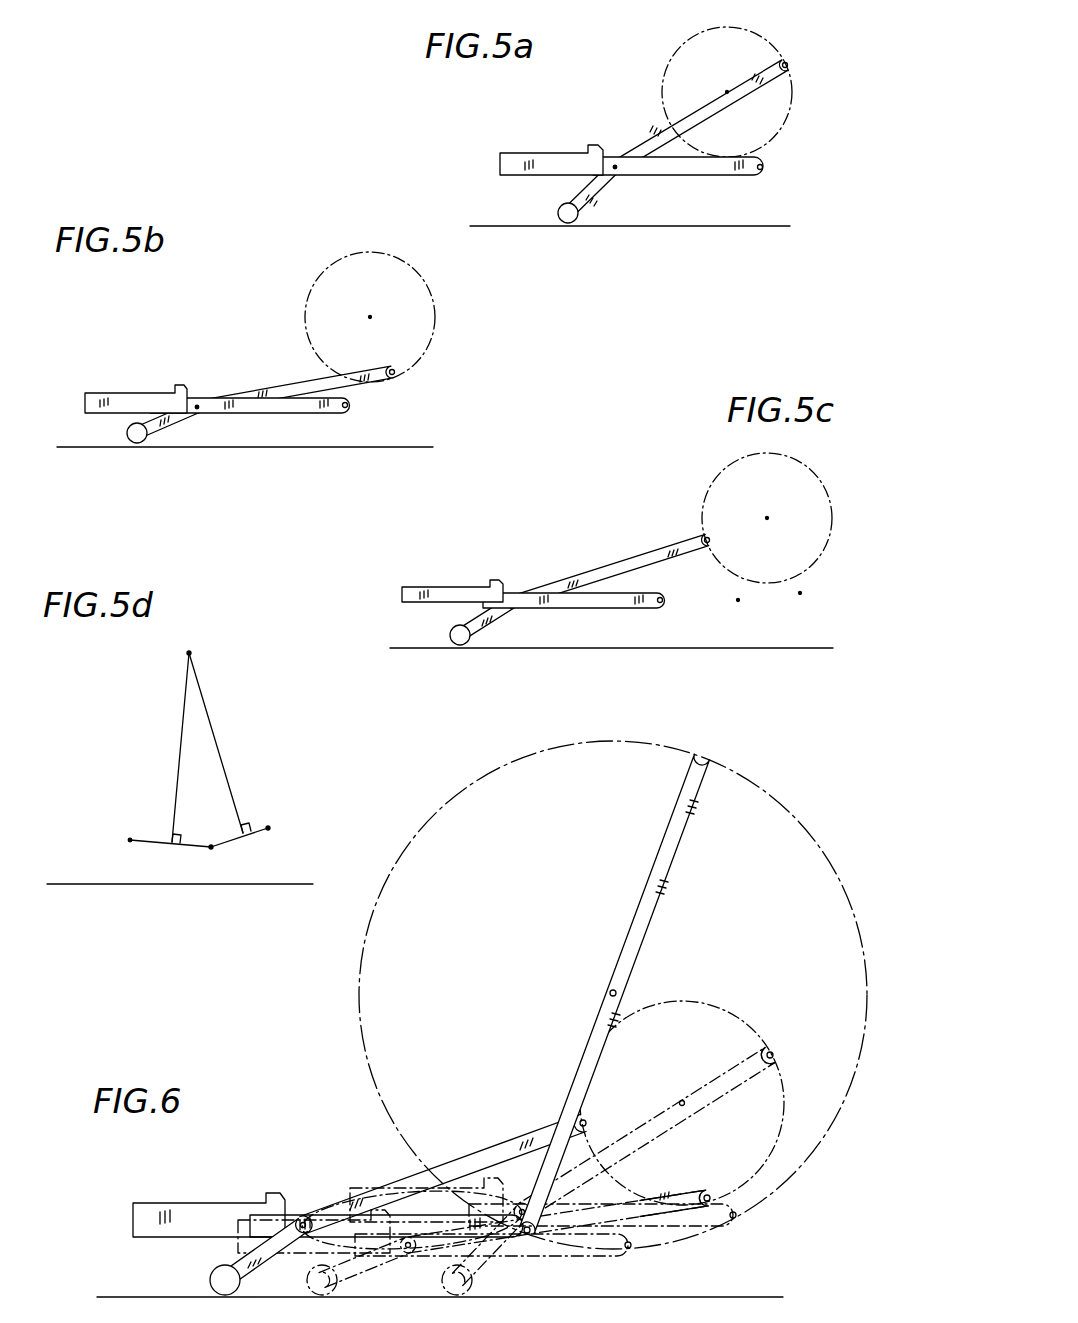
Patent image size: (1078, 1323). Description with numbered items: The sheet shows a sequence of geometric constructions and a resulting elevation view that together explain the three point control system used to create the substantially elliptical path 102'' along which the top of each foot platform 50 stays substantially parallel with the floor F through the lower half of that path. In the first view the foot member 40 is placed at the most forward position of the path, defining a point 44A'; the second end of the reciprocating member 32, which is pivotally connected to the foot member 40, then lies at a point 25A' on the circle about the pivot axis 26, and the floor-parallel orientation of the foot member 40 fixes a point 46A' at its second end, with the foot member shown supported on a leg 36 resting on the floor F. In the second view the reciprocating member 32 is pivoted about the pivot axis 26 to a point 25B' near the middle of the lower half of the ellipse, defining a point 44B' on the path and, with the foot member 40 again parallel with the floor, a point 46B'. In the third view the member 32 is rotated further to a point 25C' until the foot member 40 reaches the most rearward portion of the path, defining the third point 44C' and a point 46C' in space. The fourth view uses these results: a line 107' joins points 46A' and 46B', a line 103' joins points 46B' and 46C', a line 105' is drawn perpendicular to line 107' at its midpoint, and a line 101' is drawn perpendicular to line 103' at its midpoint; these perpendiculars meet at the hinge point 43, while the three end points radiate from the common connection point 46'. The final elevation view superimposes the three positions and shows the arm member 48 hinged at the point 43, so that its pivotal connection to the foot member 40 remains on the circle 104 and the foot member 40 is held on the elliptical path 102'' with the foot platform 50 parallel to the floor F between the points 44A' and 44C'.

In FIG. 5a, the pivot axis 26 is at (727, 92).
In FIG. 5b, the pivot axis 26 is at (370, 317).
In FIG. 5c, the pivot axis 26 is at (767, 518).
In FIG. 5a, the reciprocating member 32 is at (645, 152).
In FIG. 5a, the roller leg 36 is at (570, 218).
In FIG. 5b, the roller leg 36 is at (163, 423).
In FIG. 5c, the roller leg 36 is at (482, 621).
In FIG. 6, the roller leg 36 is at (210, 1280).
In FIG. 5a, the foot member 40 is at (687, 176).
In FIG. 6, the hinge point 43 is at (611, 991).
In FIG. 6, the arm member 48 is at (655, 873).
In FIG. 5a, the foot platform 50 is at (532, 153).
In FIG. 5b, the foot platform 50 is at (125, 393).
In FIG. 5c, the foot platform 50 is at (437, 587).
In FIG. 6, the foot platform 50 is at (203, 1203).
In FIG. 6, the circle 104 is at (782, 806).
In FIG. 6, the substantially elliptical path 102'' is at (411, 1177).
In FIG. 6, the point on circle about pivot axis 25A' is at (672, 1104).
In FIG. 6, the second point on circle about pivot axis 25B' is at (585, 1188).
In FIG. 6, the point on circle about pivot axis 25C' is at (487, 1146).
In FIG. 6, the point 44A' is at (541, 1184).
In FIG. 6, the point 44B' is at (433, 1195).
In FIG. 5c, the third point 44C' is at (609, 565).
In FIG. 6, the third point 44C' is at (371, 1212).
In FIG. 5c, the point 46A' is at (839, 603).
In FIG. 5d, the point 46A' is at (311, 837).
In FIG. 6, the point 46A' is at (788, 1213).
In FIG. 5c, the point 46B' is at (772, 650).
In FIG. 5d, the point 46B' is at (205, 899).
In FIG. 6, the point 46B' is at (677, 1259).
In FIG. 5c, the point 46C' is at (586, 647).
In FIG. 5d, the point 46C' is at (89, 853).
In FIG. 6, the point 46C' is at (563, 1259).
In FIG. 5d, the pivotal connection point 46' is at (220, 629).
In FIG. 5d, the line 101' is at (148, 748).
In FIG. 5d, the line 103' is at (159, 810).
In FIG. 5d, the line 105' is at (239, 743).
In FIG. 5d, the line 107' is at (265, 806).
In FIG. 5a, the floor F is at (494, 226).
In FIG. 5b, the floor F is at (70, 447).
In FIG. 5c, the floor F is at (400, 648).
In FIG. 6, the floor F is at (118, 1297).